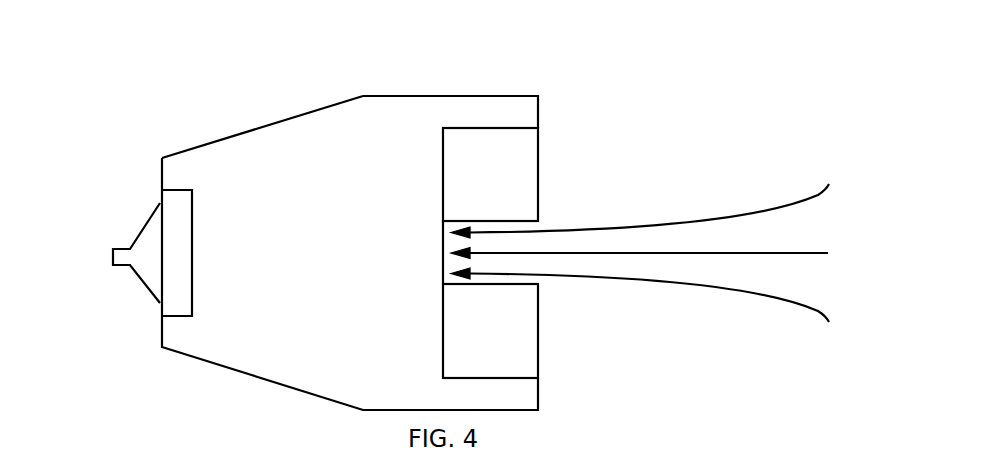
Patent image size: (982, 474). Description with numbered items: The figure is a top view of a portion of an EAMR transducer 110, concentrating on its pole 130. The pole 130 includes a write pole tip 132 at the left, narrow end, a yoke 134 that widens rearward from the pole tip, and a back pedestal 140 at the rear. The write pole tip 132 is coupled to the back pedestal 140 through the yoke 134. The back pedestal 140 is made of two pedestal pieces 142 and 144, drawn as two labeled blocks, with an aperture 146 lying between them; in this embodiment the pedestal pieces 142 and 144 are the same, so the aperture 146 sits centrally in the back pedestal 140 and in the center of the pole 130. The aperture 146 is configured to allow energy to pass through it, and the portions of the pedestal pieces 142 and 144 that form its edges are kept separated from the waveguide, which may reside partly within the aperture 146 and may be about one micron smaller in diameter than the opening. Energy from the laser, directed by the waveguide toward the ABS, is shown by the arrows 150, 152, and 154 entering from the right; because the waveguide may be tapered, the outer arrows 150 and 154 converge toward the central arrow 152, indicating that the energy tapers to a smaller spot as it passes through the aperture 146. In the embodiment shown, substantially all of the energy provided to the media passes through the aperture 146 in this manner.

The EAMR transducer 110 is at (426, 29).
The pole 130 is at (280, 57).
The pole tip 132 is at (124, 246).
The yoke 134 is at (280, 103).
The back pedestal 140 is at (498, 70).
The pedestal piece 142 is at (539, 159).
The pedestal piece 144 is at (539, 315).
The aperture 146 is at (553, 241).
The arrow 150 is at (660, 225).
The arrow 152 is at (726, 252).
The arrow 154 is at (660, 278).